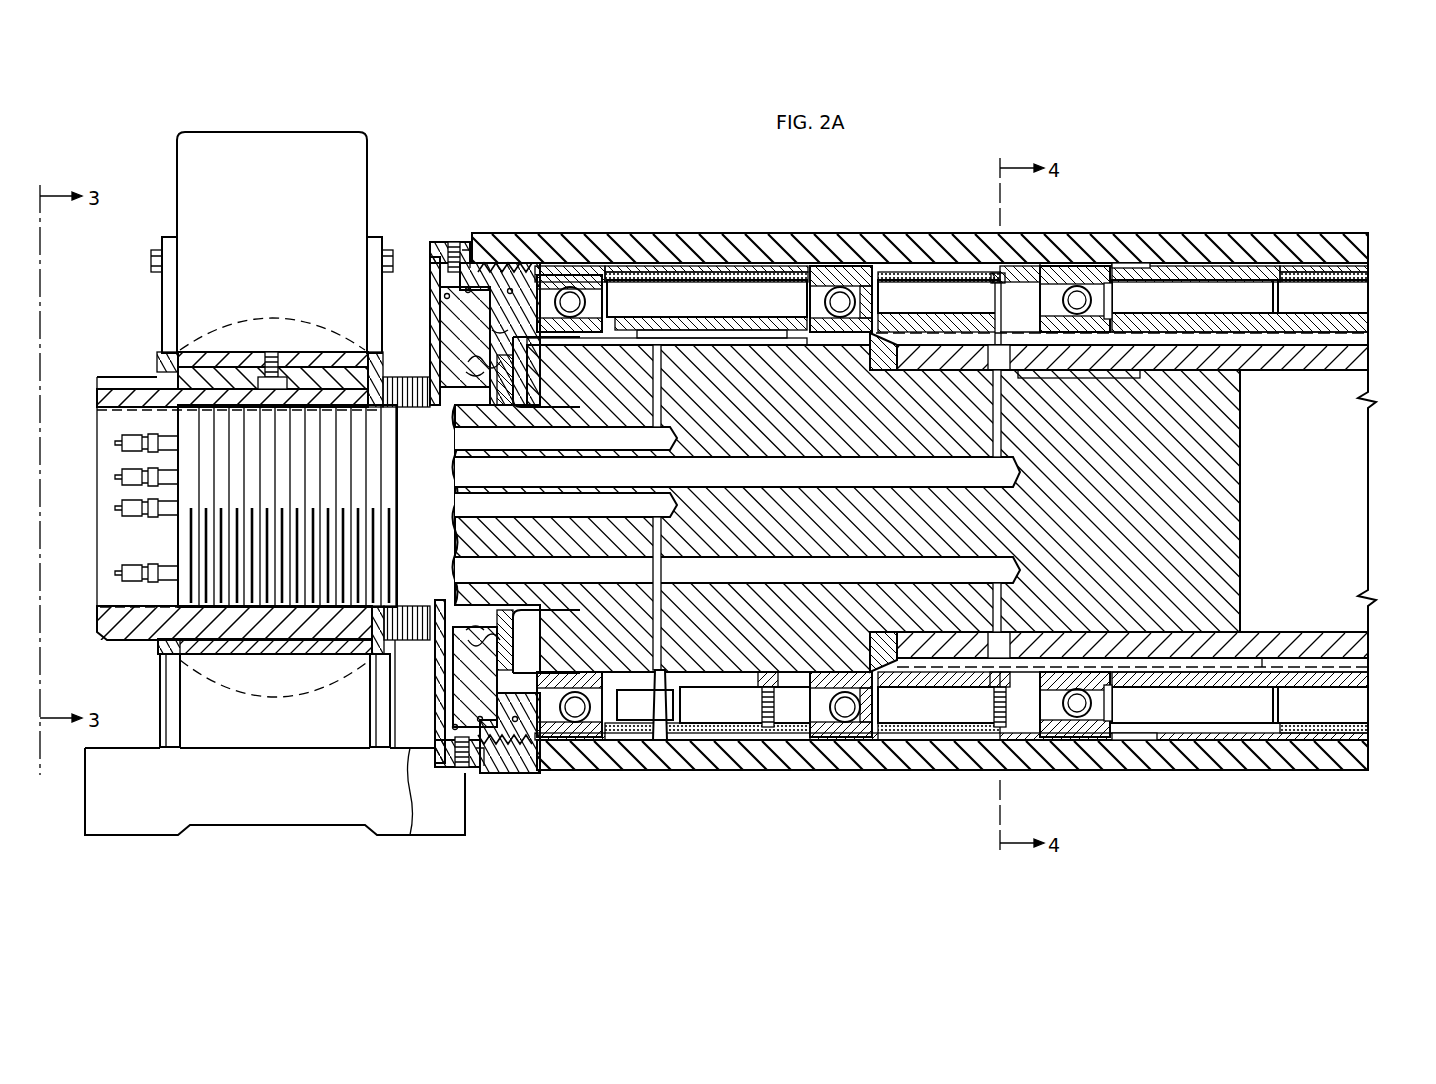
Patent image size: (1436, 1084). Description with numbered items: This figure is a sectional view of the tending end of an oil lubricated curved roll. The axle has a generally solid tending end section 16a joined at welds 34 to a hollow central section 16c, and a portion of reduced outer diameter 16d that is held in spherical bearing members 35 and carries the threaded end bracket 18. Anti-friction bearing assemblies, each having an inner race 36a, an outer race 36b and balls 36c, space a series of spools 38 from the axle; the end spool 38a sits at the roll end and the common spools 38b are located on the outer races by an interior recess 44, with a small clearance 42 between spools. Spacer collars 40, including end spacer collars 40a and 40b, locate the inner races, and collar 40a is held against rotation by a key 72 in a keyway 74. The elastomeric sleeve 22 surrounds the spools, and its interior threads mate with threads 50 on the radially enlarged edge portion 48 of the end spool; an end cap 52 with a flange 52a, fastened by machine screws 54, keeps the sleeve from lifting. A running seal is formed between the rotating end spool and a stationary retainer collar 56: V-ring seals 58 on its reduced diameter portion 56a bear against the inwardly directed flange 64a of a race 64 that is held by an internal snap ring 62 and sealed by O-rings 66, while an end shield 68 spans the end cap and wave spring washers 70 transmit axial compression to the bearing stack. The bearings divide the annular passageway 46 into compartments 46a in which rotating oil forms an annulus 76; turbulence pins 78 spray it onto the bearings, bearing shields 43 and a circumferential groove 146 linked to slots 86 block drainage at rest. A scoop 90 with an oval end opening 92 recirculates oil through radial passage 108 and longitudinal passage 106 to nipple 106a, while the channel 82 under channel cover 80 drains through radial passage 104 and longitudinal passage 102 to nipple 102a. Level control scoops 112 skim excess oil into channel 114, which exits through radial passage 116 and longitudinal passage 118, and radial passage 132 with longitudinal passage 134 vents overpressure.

The tending end section 16a is at (845, 417).
The hollow central section 16c is at (1278, 372).
The portion of reduced outer diameter 16d is at (302, 485).
The end bracket 18 is at (266, 132).
The elastomeric sleeve 22 is at (630, 252).
The welds 34 is at (880, 352).
The spherical bearing members 35 is at (270, 318).
The inner race 36a is at (830, 292).
The outer race 36b is at (850, 290).
The balls 36c is at (866, 290).
The spool 38 is at (645, 263).
The end spool 38a is at (665, 270).
The common spool 38b is at (1045, 268).
The spacer collars 40 is at (1224, 320).
The end spacer collar 40a is at (688, 320).
The end spacer collar 40b is at (945, 318).
The clearance 42 is at (1280, 300).
The bearing shield 43 is at (1111, 300).
The interior recess 44 is at (1112, 270).
The annular passageway 46 is at (1350, 301).
The annular compartments 46a is at (665, 313).
The radially enlarged edge portion 48 is at (495, 266).
The threads 50 is at (506, 262).
The end cap 52 is at (438, 242).
The flange 52a is at (466, 248).
The machine screws 54 is at (452, 242).
The retainer collar 56 is at (516, 380).
The reduced diameter portion 56a is at (457, 408).
The V-ring seals 58 is at (457, 397).
The internal snap ring 62 is at (445, 296).
The race 64 is at (462, 320).
The inwardly directed flange 64a is at (500, 370).
The O-rings 66 is at (505, 332).
The end shield 68 is at (432, 330).
The wave spring washers 70 is at (427, 638).
The key 72 is at (730, 340).
The keyway 74 is at (795, 342).
The oil annulus 76 is at (705, 276).
The turbulence pins 78 is at (760, 712).
The channel cover 80 is at (1168, 328).
The longitudinal channel 82 is at (1182, 668).
The slots 86 is at (1085, 288).
The scoop 90 is at (660, 712).
The oval end opening 92 is at (998, 278).
The longitudinal passage 102 is at (928, 576).
The nipple 102a is at (118, 580).
The radial passage 104 is at (1001, 611).
The longitudinal passage 106 is at (638, 516).
The nipple 106a is at (118, 515).
The radial passage 108 is at (661, 530).
The level control scoops 112 is at (1000, 300).
The channel 114 is at (1130, 335).
The radial passage 116 is at (1001, 422).
The longitudinal passage 118 is at (928, 481).
The radial passage 132 is at (661, 391).
The longitudinal passage 134 is at (633, 450).
The circumferential groove 146 is at (1152, 263).